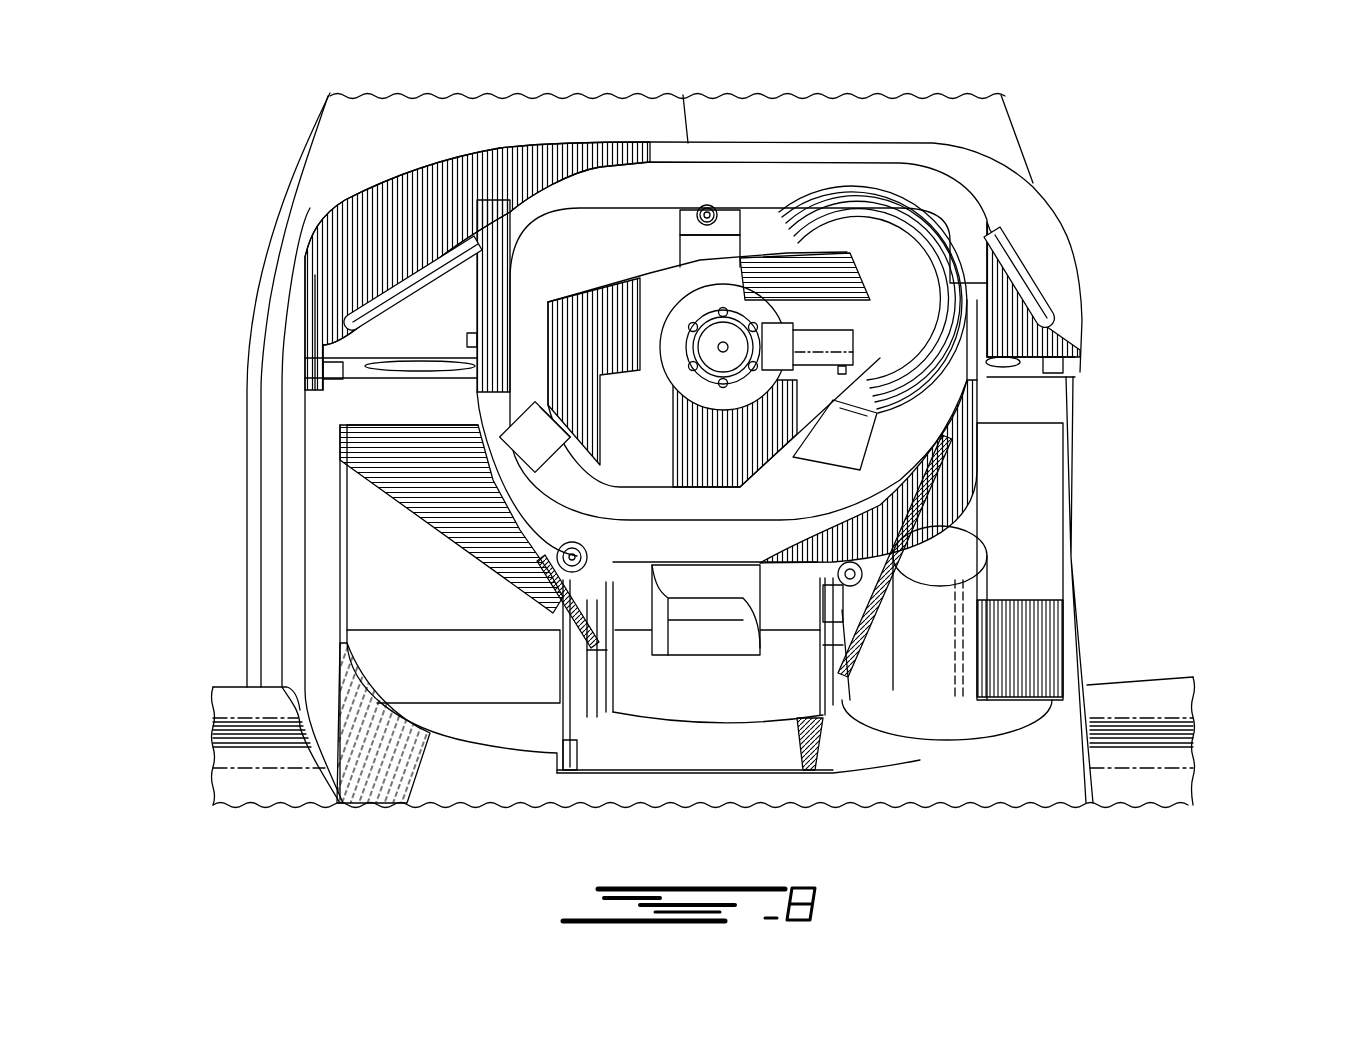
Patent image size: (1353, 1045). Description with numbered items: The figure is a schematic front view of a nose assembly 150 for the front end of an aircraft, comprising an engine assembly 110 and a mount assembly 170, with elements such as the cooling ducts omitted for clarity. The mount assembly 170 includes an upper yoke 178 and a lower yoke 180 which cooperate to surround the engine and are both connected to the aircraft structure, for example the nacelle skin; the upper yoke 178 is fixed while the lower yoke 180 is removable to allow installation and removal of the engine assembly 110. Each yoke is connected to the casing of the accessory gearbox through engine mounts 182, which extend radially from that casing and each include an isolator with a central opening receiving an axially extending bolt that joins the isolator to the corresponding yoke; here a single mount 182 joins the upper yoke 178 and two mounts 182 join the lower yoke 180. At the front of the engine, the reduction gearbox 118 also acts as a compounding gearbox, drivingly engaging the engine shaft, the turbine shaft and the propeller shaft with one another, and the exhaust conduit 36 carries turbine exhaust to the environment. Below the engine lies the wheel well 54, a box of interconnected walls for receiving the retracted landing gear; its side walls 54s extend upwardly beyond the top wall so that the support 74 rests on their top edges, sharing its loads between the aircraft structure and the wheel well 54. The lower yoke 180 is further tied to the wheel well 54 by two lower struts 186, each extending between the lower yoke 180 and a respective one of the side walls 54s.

The nose assembly 150 is at (206, 189).
The engine mounts 182 is at (713, 250).
The upper yoke 178 is at (967, 203).
The engine assembly 110 is at (917, 341).
The mount assembly 170 is at (1116, 229).
The support 74 is at (1050, 258).
The reduction gearbox 118 is at (867, 293).
The lower yoke 180 is at (930, 440).
The exhaust conduit 36 is at (920, 660).
The lower struts 186 is at (557, 587).
The side walls 54s is at (577, 740).
The wheel well 54 is at (710, 735).